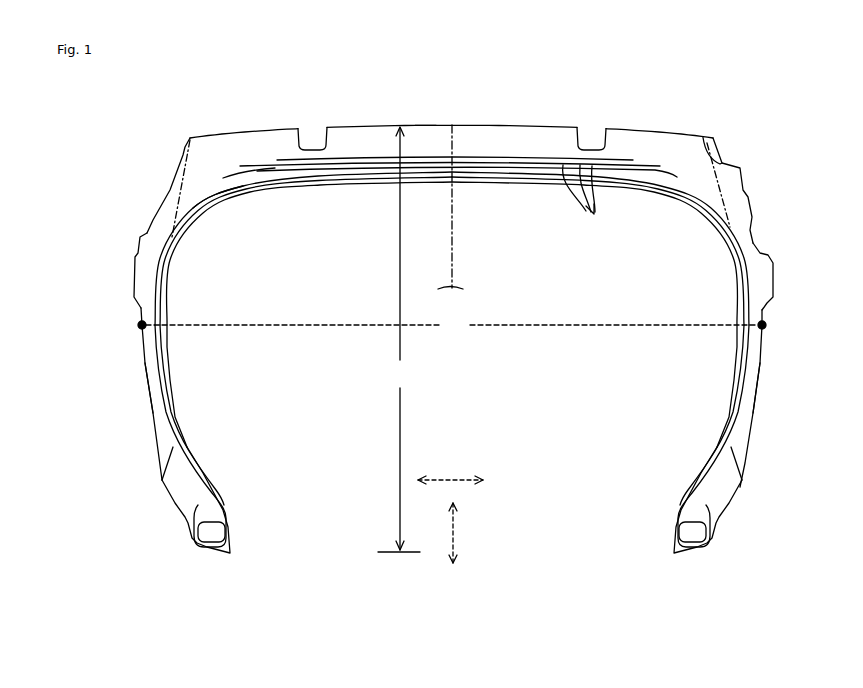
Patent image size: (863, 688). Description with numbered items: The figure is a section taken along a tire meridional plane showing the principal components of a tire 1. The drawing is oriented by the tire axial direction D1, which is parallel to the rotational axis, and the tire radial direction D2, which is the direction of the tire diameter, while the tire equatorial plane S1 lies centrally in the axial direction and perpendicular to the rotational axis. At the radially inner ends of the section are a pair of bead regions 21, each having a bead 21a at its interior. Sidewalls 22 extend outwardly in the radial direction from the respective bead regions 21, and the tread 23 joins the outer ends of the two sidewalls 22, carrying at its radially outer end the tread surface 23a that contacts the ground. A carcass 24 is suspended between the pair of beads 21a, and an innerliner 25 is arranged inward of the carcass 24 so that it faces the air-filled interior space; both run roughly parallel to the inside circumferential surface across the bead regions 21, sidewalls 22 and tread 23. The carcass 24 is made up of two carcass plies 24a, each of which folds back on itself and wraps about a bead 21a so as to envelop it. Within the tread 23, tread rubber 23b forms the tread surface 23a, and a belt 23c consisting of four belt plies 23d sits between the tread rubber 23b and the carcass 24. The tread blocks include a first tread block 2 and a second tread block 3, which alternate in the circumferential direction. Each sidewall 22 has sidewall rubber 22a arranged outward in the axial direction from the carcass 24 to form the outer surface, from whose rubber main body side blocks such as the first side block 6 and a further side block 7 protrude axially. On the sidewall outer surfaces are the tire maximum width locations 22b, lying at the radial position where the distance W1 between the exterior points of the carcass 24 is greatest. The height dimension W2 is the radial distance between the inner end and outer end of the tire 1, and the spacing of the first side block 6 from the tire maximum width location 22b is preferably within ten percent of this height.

The tire 1 is at (774, 81).
The first tread block 2 is at (225, 130).
The second tread block 3 is at (657, 133).
The first side block 6 is at (148, 230).
The side block 7 is at (740, 168).
The bead region 21 is at (171, 518).
The bead 21a is at (227, 522).
The sidewall 22 is at (143, 189).
The sidewall rubber 22a is at (148, 372).
The tire maximum width location 22b is at (454, 324).
The tread 23 is at (483, 117).
The tread surface 23a is at (257, 126).
The tread rubber 23b is at (423, 126).
The belt 23c is at (538, 158).
The belt ply 23d is at (604, 194).
The carcass 24 is at (367, 183).
The carcass ply 24a is at (212, 212).
The innerliner 25 is at (497, 184).
The tire equatorial plane S1 is at (452, 265).
The distance between exterior points of carcass W1 is at (452, 325).
The height dimension of tire W2 is at (399, 339).
The tire axial direction D1 is at (450, 472).
The tire radial direction D2 is at (462, 533).